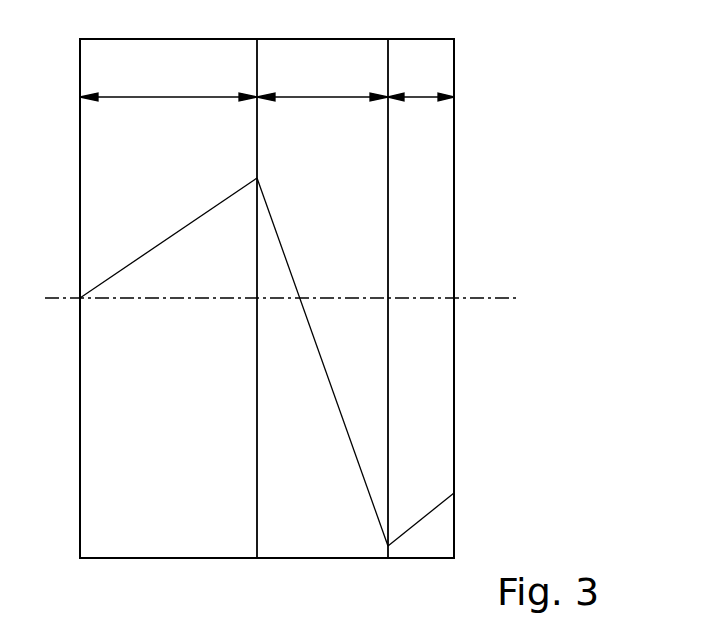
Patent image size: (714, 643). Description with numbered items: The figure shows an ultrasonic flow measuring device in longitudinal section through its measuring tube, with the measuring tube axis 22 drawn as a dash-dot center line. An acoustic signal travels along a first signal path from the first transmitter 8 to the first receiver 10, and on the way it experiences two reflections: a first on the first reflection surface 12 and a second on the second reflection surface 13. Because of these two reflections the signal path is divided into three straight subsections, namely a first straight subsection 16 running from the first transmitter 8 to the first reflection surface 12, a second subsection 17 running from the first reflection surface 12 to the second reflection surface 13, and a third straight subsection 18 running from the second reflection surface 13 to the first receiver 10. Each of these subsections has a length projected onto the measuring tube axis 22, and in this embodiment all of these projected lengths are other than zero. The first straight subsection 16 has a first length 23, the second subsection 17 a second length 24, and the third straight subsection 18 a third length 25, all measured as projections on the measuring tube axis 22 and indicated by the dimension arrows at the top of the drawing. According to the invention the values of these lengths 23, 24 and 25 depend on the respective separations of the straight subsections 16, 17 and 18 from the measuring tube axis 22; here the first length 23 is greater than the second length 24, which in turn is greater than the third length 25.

The first transmitter 8 is at (80, 298).
The first receiver 10 is at (454, 493).
The first reflection surface 12 is at (257, 178).
The second reflection surface 13 is at (388, 546).
The first straight subsection 16 is at (157, 246).
The second subsection 17 is at (288, 262).
The third straight subsection 18 is at (427, 512).
The measuring tube axis 22 is at (517, 298).
The first length 23 is at (168, 82).
The second length 24 is at (322, 82).
The third length 25 is at (421, 82).